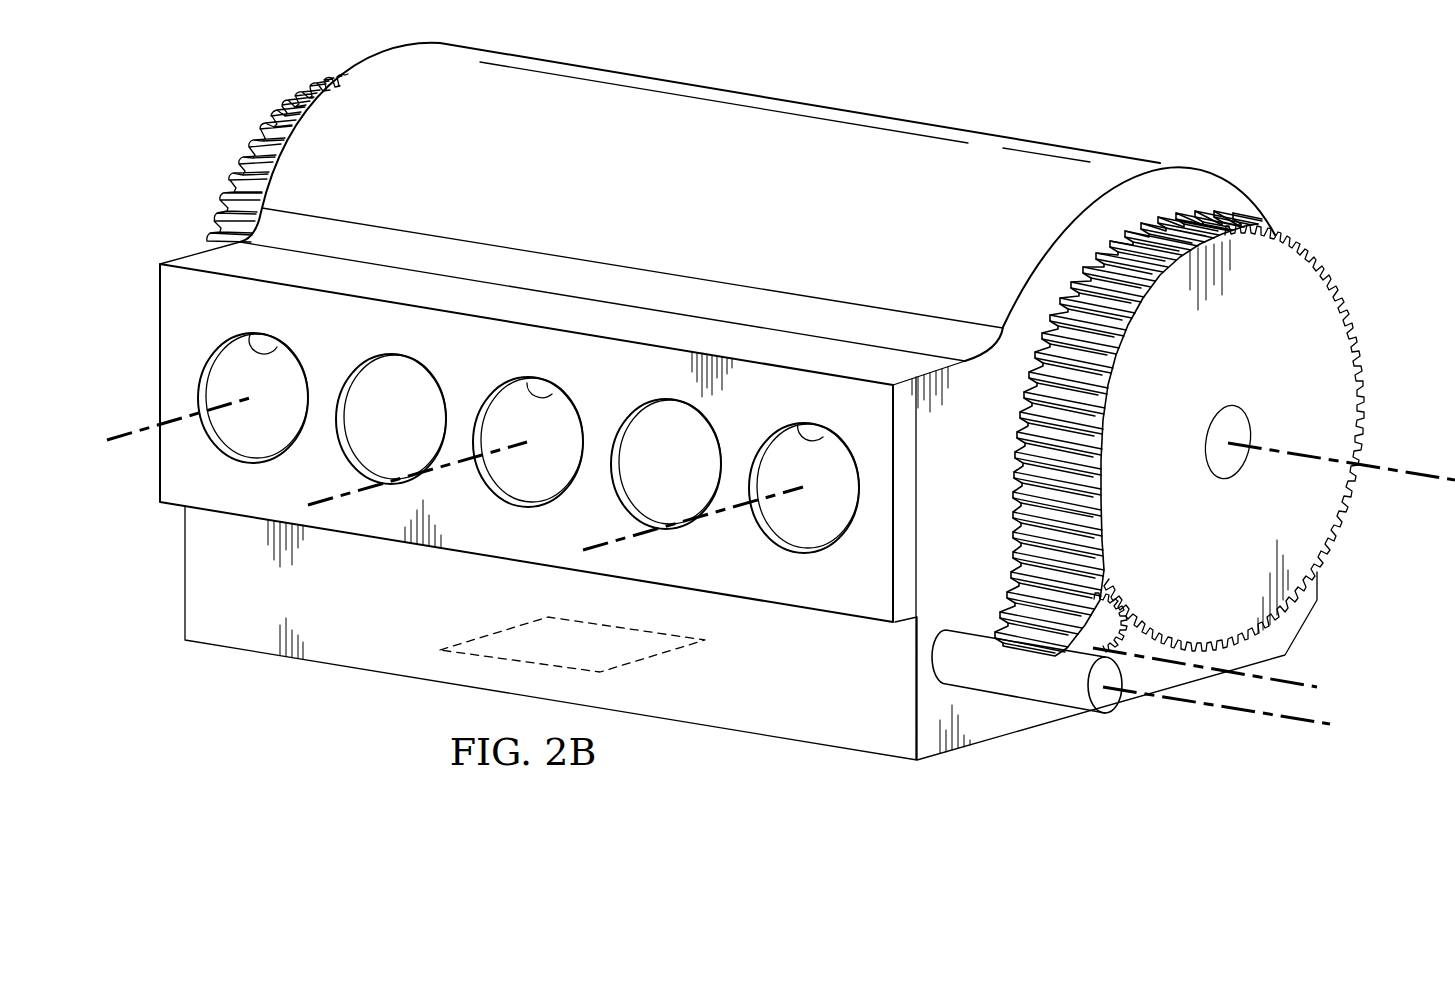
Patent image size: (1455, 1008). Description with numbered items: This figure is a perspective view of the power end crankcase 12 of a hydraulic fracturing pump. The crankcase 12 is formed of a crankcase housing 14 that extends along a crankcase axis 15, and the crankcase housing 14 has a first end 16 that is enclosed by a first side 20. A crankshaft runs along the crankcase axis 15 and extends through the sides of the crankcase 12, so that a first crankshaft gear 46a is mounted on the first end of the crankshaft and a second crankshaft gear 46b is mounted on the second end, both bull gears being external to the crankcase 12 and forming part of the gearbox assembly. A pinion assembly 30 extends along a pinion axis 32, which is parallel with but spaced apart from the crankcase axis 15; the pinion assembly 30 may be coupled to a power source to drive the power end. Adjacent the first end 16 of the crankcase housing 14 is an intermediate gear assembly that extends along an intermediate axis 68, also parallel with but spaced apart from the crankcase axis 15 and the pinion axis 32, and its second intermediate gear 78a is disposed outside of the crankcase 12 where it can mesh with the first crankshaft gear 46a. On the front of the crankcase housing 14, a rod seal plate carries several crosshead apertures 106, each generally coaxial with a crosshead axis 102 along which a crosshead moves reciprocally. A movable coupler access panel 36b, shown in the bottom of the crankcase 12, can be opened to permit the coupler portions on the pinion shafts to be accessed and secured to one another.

The crankcase 12 is at (822, 100).
The crankcase housing 14 is at (986, 145).
The first end 16 is at (1224, 176).
The first side 20 is at (1232, 199).
The first crankshaft gear 46a is at (1316, 250).
The second crankshaft gear 46b is at (238, 156).
The crosshead aperture 106 is at (250, 335).
The crosshead axis 102 is at (119, 432).
The crankcase axis 15 is at (1302, 450).
The coupler access panel 36b is at (487, 638).
The intermediate axis 68 is at (1303, 680).
The pinion axis 32 is at (1316, 728).
The pinion assembly 30 is at (1100, 728).
The second intermediate gear 78a is at (1022, 640).